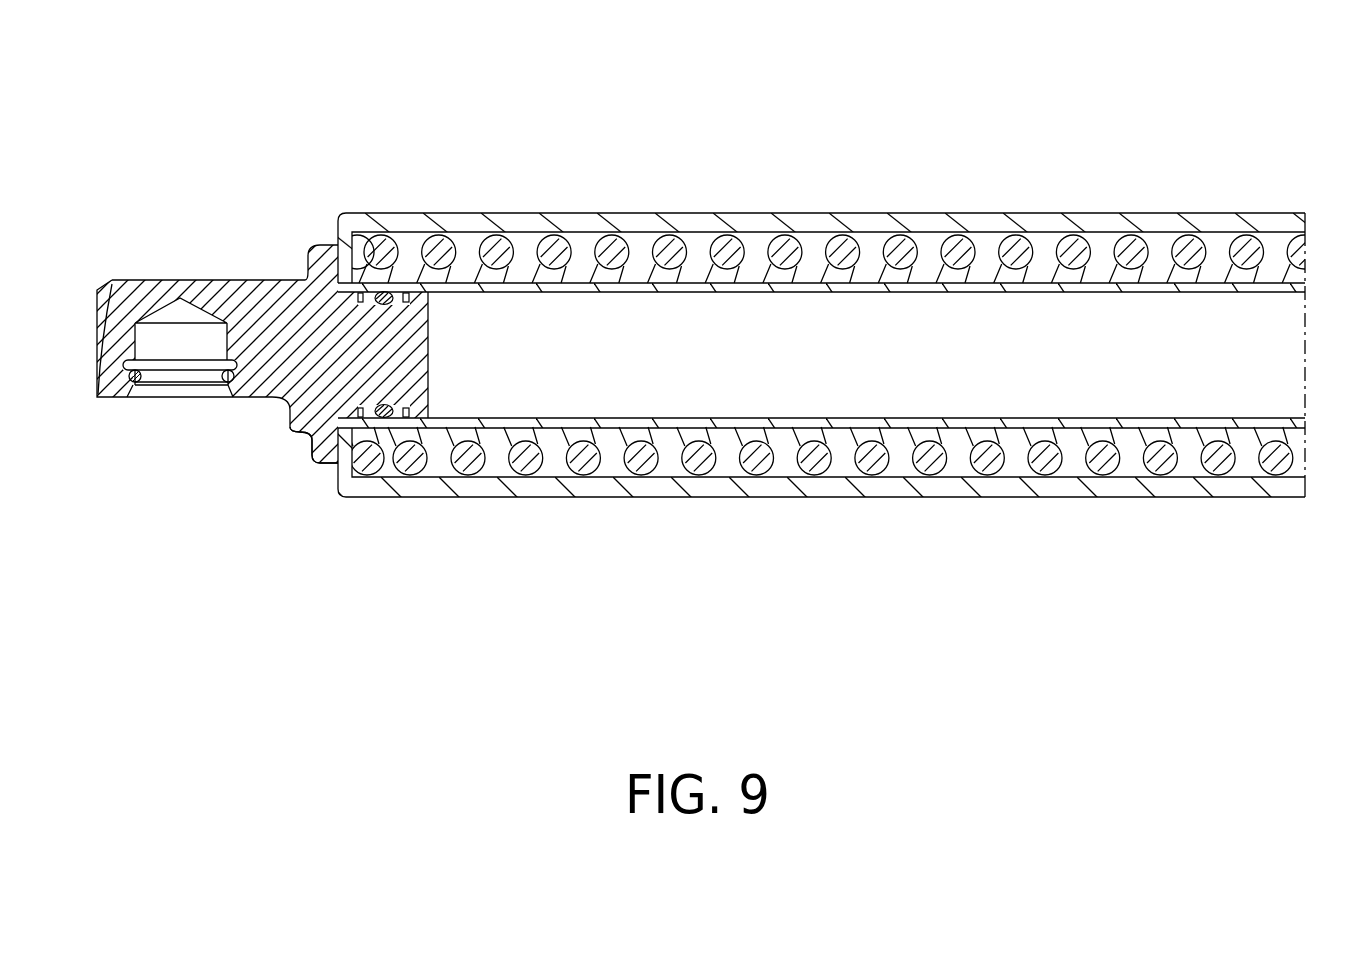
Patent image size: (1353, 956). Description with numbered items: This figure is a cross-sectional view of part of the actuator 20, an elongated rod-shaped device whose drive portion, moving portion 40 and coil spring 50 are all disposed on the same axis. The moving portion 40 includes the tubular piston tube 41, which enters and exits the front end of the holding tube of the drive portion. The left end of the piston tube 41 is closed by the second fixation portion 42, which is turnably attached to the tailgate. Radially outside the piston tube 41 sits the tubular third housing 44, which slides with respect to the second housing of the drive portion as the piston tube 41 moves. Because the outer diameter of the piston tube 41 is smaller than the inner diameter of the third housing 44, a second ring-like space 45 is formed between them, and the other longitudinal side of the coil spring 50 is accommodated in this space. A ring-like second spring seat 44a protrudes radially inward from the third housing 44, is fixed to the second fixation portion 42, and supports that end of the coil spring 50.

The actuator 20 is at (1035, 574).
The moving portion 40 is at (522, 209).
The piston tube 41 is at (1157, 283).
The second fixation portion 42 is at (280, 338).
The third housing 44 is at (667, 488).
The second spring seat 44a is at (343, 452).
The second ring-like space 45 is at (760, 257).
The coil spring 50 is at (960, 252).